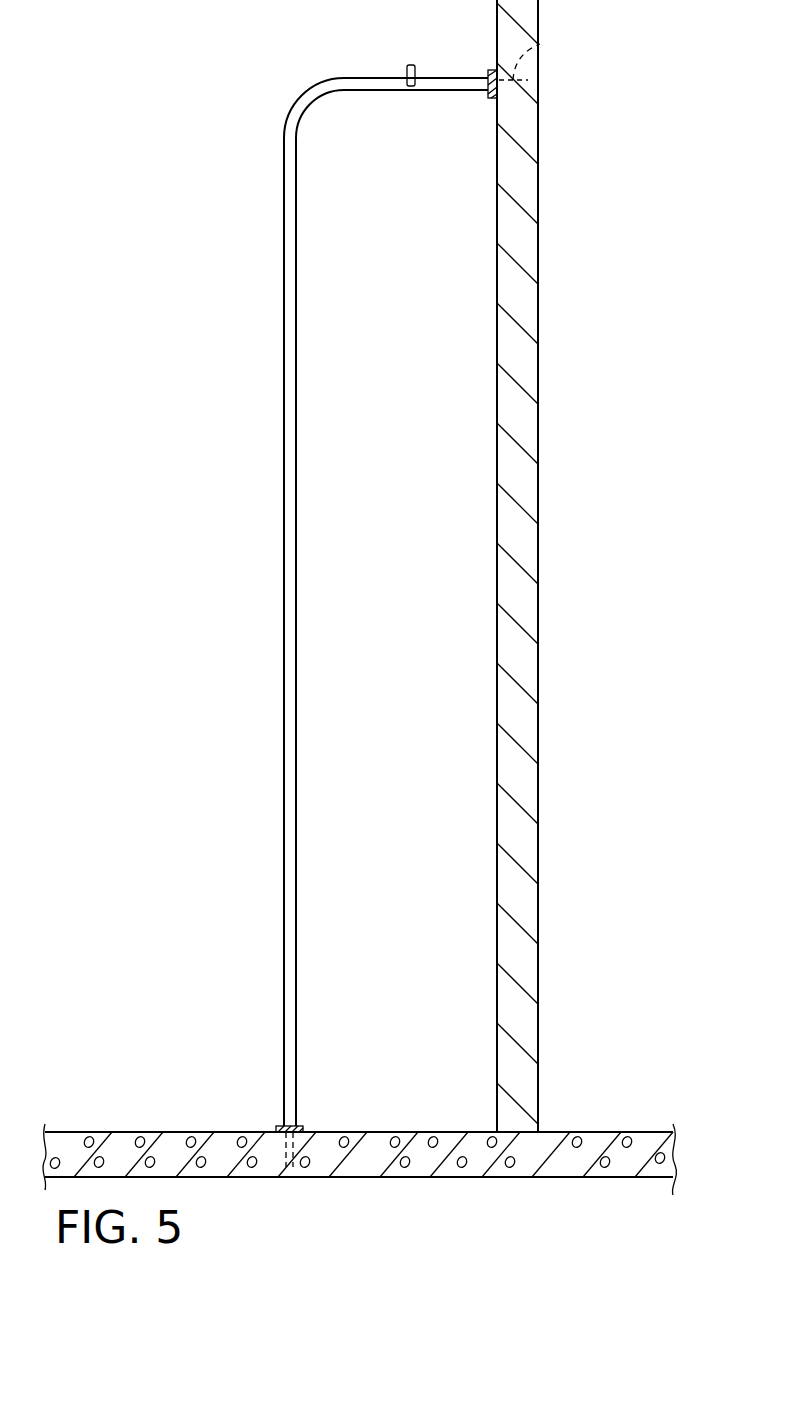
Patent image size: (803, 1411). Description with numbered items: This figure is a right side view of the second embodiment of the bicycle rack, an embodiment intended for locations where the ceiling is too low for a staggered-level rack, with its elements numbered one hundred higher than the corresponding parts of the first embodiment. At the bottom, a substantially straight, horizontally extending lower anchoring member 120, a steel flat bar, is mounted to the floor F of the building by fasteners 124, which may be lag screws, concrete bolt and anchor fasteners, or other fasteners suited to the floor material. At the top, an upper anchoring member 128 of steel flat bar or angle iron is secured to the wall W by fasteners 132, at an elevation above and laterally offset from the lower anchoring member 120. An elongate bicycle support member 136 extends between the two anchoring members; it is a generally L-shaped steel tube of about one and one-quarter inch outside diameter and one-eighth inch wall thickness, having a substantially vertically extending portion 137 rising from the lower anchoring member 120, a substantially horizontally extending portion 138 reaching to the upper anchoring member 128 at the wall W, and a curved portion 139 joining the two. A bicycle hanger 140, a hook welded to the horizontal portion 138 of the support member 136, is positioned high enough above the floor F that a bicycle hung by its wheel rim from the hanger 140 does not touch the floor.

The wall W is at (538, 172).
The floor F is at (157, 1130).
The lower anchoring member 120 is at (312, 1116).
The fasteners 124 is at (330, 1180).
The upper anchoring member 128 is at (480, 62).
The fasteners 132 is at (540, 44).
The bicycle support member 136 is at (336, 575).
The vertically extending portion 137 is at (282, 505).
The horizontally extending portion 138 is at (368, 77).
The curved portion 139 is at (313, 100).
The hanger 140 is at (408, 63).